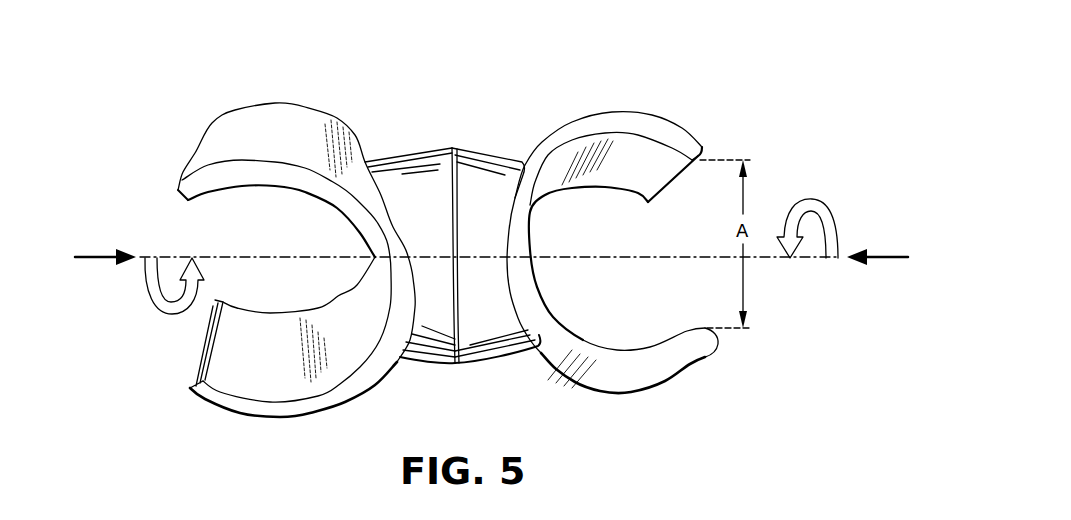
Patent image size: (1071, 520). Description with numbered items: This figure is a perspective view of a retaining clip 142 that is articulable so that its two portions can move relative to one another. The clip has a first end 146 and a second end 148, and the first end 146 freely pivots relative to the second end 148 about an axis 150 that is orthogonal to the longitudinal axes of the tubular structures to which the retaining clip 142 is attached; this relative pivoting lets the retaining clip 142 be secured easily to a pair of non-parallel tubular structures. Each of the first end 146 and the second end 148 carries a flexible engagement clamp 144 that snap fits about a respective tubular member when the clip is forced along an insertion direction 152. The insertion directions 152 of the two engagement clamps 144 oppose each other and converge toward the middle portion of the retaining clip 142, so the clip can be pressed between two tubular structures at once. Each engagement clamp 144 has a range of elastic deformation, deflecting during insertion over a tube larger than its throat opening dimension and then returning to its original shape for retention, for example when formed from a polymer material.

The retaining clip 142 is at (190, 43).
The flexible engagement clamp 144 is at (212, 122).
The first end 146 is at (421, 151).
The second end 148 is at (487, 157).
The axis 150 is at (562, 256).
The insertion direction 152 is at (98, 250).